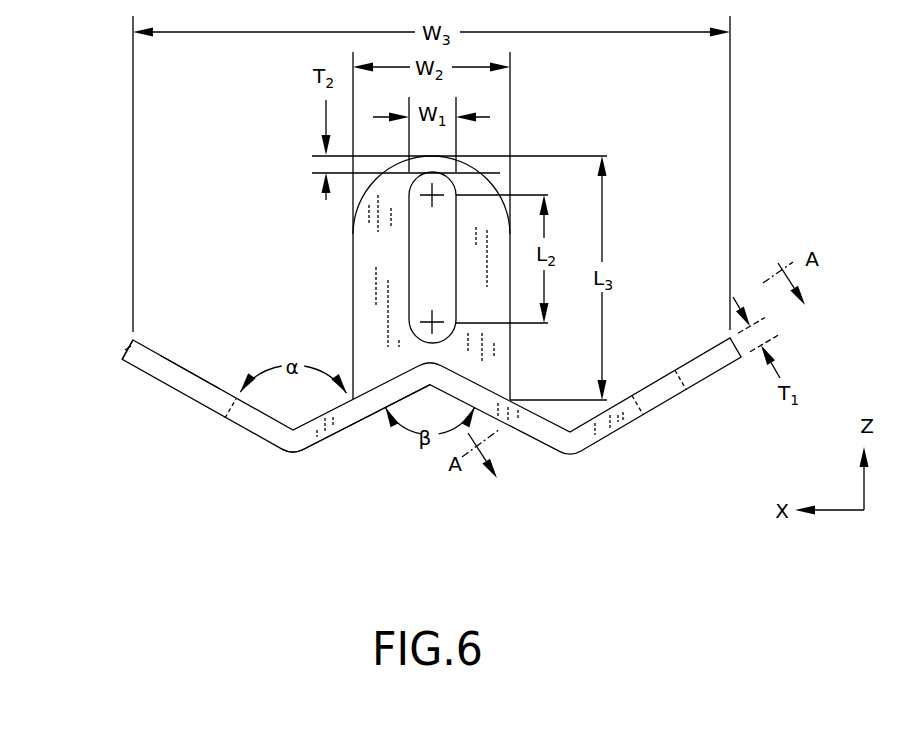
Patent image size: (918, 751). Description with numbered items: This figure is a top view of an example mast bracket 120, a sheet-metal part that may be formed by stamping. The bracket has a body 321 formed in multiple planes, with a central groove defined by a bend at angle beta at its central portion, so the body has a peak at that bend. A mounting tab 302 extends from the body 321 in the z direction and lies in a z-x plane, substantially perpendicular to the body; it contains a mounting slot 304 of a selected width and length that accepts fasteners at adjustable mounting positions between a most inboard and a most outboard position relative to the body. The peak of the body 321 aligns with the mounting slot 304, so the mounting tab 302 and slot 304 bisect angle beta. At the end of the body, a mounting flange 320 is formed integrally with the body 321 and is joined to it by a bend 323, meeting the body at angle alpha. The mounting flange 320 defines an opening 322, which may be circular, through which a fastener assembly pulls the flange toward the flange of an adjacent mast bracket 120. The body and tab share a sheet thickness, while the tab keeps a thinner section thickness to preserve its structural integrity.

The mast bracket 120 is at (393, 380).
The mounting tab 302 is at (353, 272).
The mounting slot 304 is at (410, 245).
The mounting flange 320 is at (128, 357).
The body 321 is at (341, 430).
The opening 322 is at (188, 382).
The bend 323 is at (292, 450).